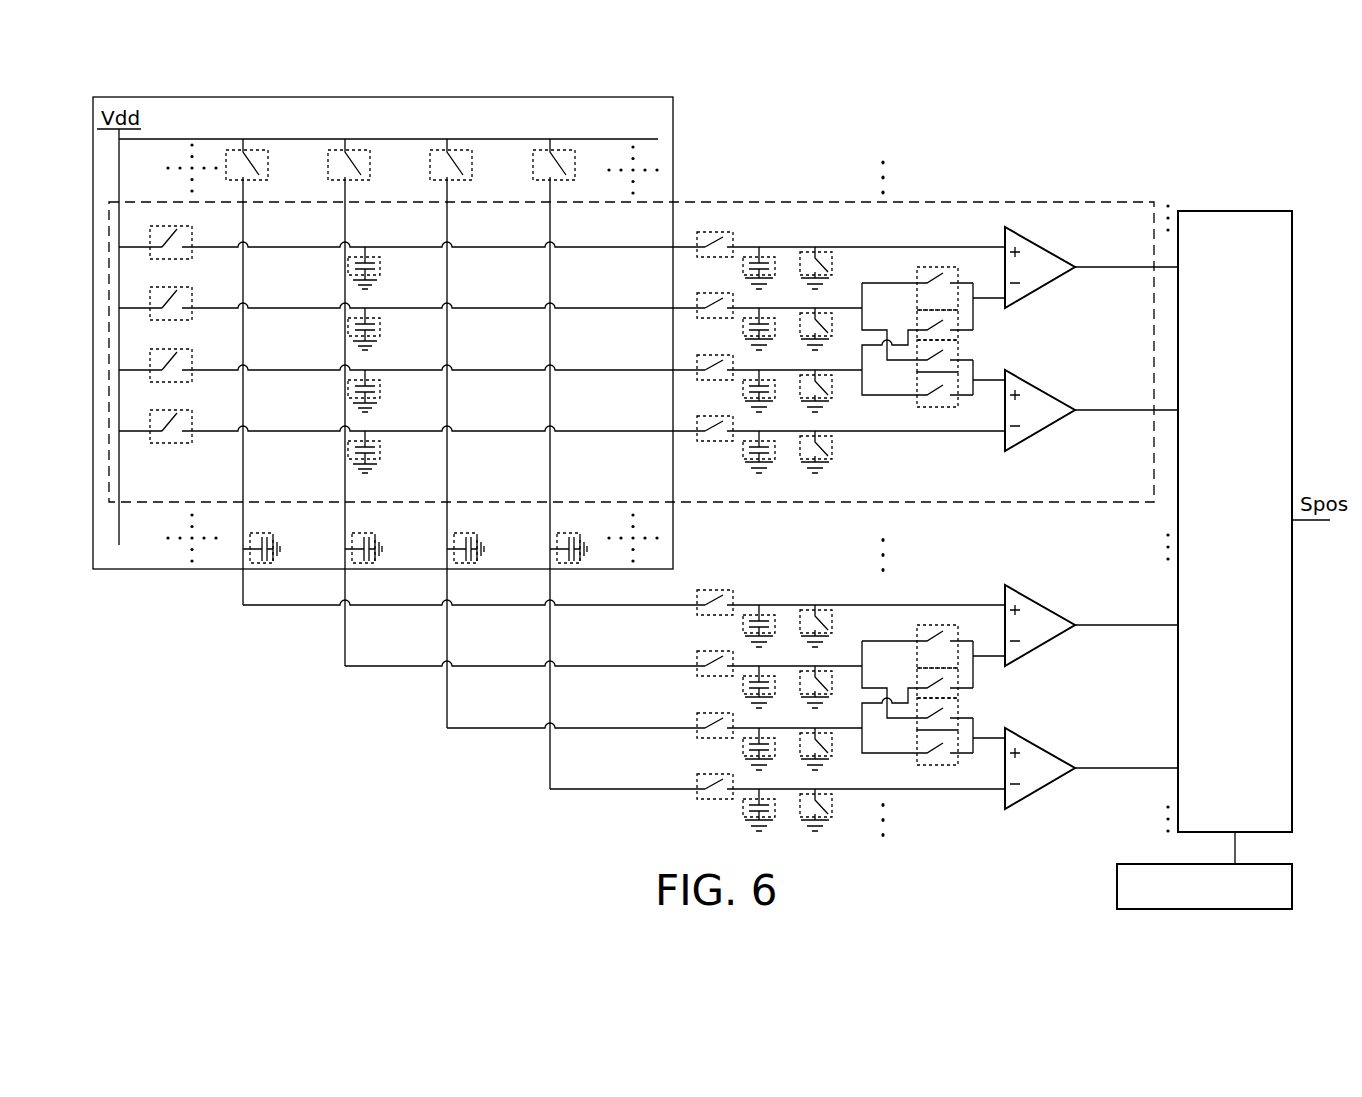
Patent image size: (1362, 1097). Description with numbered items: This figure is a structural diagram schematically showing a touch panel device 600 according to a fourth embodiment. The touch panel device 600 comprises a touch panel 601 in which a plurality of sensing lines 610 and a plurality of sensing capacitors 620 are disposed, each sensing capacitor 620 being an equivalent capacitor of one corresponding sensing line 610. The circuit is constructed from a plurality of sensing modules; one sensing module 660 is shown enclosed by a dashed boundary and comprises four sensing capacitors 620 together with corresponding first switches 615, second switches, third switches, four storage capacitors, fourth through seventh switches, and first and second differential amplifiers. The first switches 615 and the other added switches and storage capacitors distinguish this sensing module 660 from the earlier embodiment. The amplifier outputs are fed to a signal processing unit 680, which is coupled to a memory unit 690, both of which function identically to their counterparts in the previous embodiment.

The touch panel device 600 is at (1220, 148).
The touch panel 601 is at (673, 156).
The sensing lines 610 is at (303, 246).
The first switches 615 is at (267, 164).
The sensing capacitors 620 is at (379, 272).
The sensing module 660 is at (1094, 202).
The signal processing unit 680 is at (1230, 211).
The memory unit 690 is at (1155, 864).